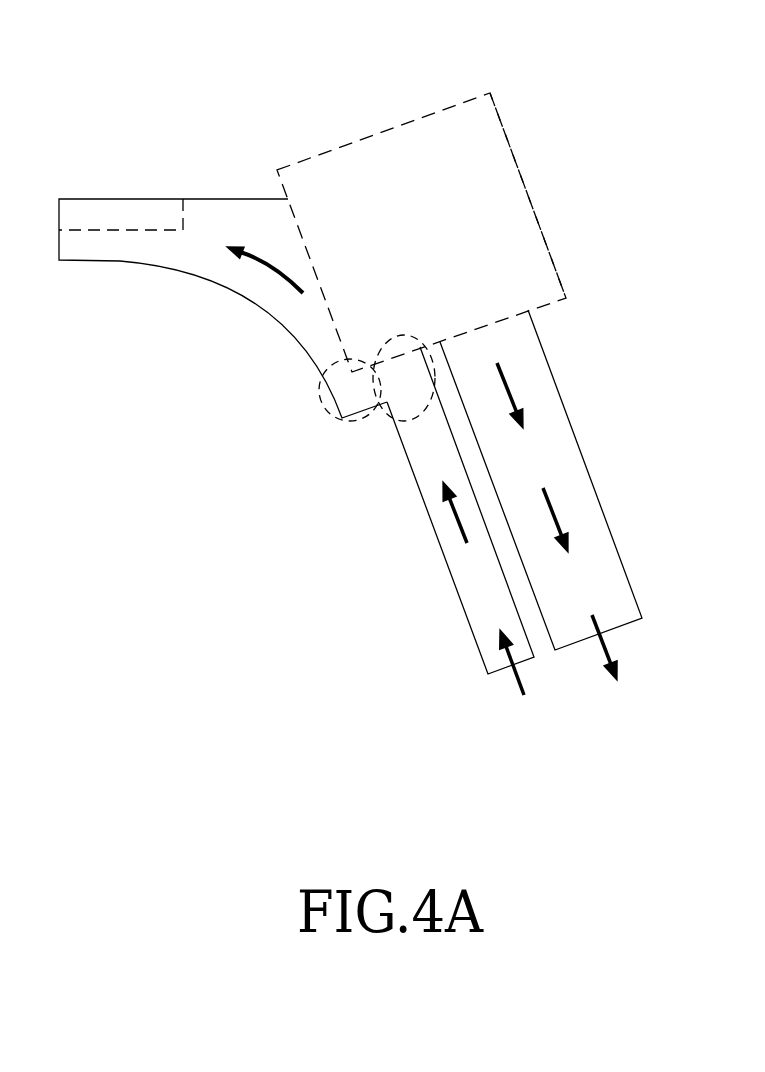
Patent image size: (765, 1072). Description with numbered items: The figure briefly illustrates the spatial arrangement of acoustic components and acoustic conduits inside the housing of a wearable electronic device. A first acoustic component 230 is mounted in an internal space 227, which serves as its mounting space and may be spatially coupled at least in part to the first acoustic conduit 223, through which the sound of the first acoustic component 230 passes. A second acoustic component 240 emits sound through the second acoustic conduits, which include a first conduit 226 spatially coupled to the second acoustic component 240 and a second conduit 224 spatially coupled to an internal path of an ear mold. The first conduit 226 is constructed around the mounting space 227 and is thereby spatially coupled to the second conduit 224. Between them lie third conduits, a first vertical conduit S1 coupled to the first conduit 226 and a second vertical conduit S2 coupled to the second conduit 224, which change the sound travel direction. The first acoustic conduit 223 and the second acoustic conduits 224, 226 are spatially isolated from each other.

The first acoustic component 230 is at (410, 153).
The internal space 227 is at (531, 182).
The second acoustic component 240 is at (120, 210).
The first conduit 226 is at (200, 253).
The second conduit 224 is at (436, 561).
The first acoustic conduit 223 is at (610, 492).
The first vertical conduit S1 is at (322, 403).
The second vertical conduit S2 is at (415, 422).